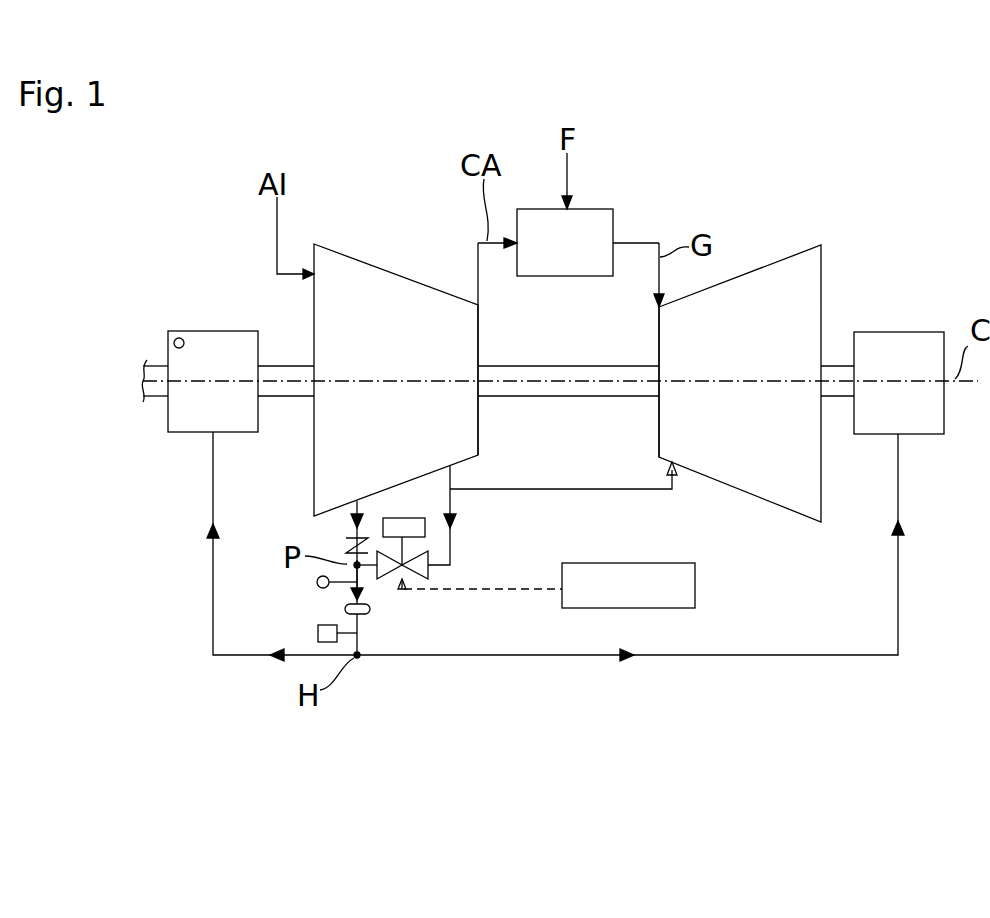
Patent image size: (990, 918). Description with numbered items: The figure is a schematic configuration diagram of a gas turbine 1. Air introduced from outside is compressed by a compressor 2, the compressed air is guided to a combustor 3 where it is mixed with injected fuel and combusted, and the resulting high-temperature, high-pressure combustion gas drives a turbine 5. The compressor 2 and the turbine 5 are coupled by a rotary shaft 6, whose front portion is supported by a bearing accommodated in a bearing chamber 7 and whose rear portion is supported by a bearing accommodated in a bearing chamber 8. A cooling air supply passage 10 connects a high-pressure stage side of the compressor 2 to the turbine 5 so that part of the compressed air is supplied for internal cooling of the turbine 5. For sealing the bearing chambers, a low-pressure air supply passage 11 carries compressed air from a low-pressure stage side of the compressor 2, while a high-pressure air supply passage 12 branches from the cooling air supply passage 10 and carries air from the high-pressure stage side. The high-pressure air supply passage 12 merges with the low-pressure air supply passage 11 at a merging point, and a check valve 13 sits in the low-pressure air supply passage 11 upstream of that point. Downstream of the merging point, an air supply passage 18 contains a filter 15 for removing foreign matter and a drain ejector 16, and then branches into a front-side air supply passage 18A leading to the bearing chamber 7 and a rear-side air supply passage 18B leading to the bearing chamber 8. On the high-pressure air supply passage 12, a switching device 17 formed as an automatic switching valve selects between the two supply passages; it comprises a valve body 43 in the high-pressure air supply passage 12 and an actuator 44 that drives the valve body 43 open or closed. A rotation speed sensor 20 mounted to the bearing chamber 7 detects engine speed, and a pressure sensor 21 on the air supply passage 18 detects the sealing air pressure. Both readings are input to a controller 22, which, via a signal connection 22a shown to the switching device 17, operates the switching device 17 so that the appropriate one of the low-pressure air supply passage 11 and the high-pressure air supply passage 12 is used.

The gas turbine 1 is at (684, 188).
The compressor 2 is at (358, 283).
The combustor 3 is at (547, 221).
The turbine 5 is at (768, 286).
The rotary shaft 6 is at (284, 372).
The bearing chamber 7 is at (215, 346).
The bearing chamber 8 is at (895, 349).
The cooling air supply passage 10 is at (572, 491).
The low-pressure air supply passage 11 is at (352, 530).
The high-pressure air supply passage 12 is at (452, 546).
The check valve 13 is at (345, 547).
The filter 15 is at (370, 616).
The drain ejector 16 is at (318, 630).
The switching device 17 is at (402, 522).
The air supply passage 18 is at (360, 572).
The front-side air supply passage 18A is at (237, 657).
The rear-side air supply passage 18B is at (433, 657).
The rotation speed sensor 20 is at (179, 338).
The pressure sensor 21 is at (317, 582).
The controller 22 is at (662, 572).
The control signal line 22a is at (468, 591).
The valve body 43 is at (430, 575).
The actuator 44 is at (378, 522).